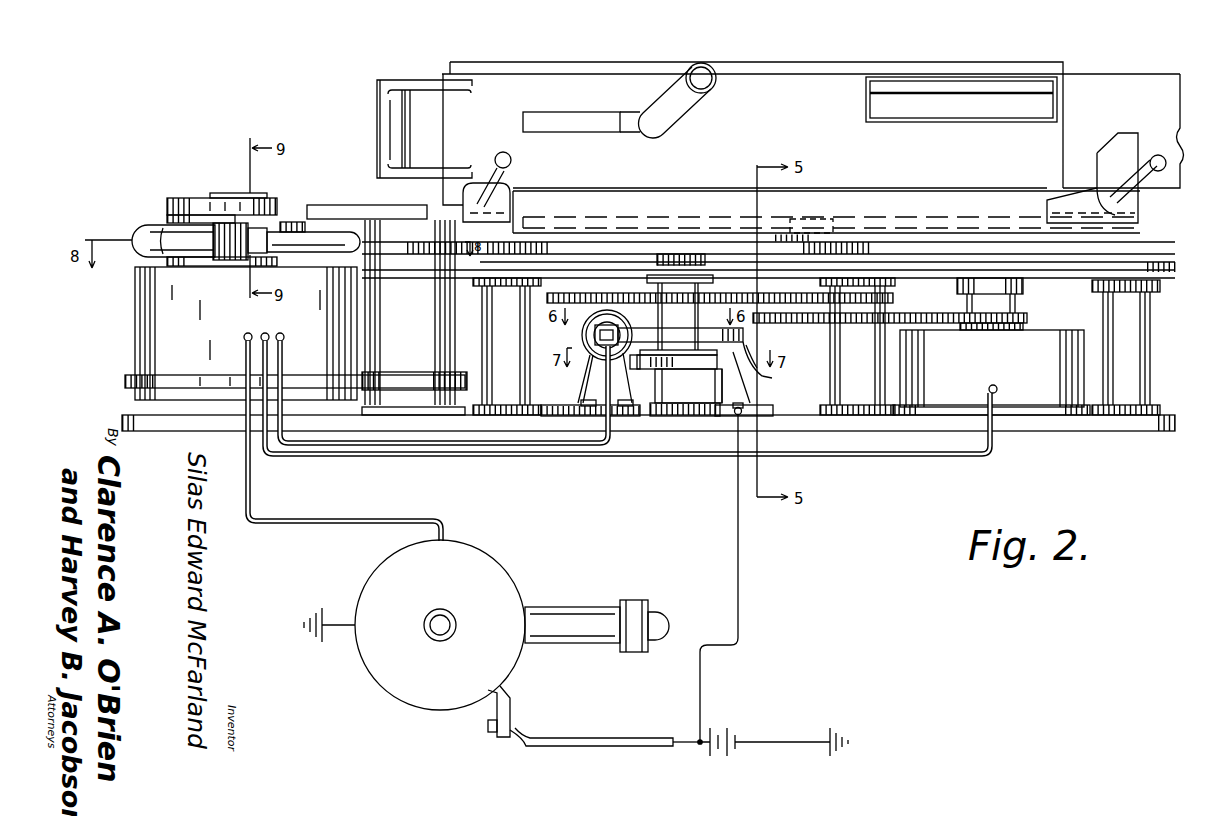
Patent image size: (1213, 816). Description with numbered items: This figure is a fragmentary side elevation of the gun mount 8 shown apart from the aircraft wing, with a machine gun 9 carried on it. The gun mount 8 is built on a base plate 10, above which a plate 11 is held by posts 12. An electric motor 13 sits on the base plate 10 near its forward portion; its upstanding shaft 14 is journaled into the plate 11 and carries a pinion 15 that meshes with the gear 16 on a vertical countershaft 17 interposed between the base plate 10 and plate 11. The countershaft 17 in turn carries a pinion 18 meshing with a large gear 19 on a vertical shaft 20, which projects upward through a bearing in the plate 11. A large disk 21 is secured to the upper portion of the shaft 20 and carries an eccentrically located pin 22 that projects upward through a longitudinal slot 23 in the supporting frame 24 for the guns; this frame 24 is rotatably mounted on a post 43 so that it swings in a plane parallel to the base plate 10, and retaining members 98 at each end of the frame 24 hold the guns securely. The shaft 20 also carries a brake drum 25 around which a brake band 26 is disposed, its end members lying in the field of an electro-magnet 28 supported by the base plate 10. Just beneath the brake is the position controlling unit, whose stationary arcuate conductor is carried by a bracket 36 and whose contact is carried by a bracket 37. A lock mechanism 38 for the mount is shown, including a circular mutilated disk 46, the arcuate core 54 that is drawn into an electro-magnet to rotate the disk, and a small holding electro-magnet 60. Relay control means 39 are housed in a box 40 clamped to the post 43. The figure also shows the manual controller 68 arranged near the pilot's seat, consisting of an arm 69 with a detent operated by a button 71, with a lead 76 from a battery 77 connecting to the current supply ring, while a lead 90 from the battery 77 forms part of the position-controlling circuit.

The gun mount 8 is at (1081, 437).
The machine gun 9 is at (783, 85).
The base plate 10 is at (927, 422).
The plate 11 is at (935, 272).
The post 12 is at (1140, 320).
The electric motor 13 is at (1032, 400).
The upstanding shaft 14 is at (988, 296).
The pinion 15 is at (1022, 317).
The gear 16 is at (810, 326).
The vertical countershaft 17 is at (848, 360).
The pinion 18 is at (895, 298).
The large gear 19 is at (550, 297).
The vertical shaft 20 is at (692, 254).
The large disk 21 is at (606, 247).
The eccentrically located pin 22 is at (795, 222).
The longitudinal slot 23 is at (682, 225).
The supporting frame 24 is at (898, 226).
The brake drum 25 is at (750, 354).
The brake band 26 is at (745, 331).
The electro-magnet 28 is at (595, 358).
The bracket 36 is at (745, 395).
The bracket 37 is at (634, 368).
The lock mechanism 38 is at (226, 186).
The relay control means 39 is at (128, 350).
The box 40 is at (145, 312).
The post 43 is at (440, 352).
The mutilated disk 46 is at (182, 200).
The arcuate core 54 is at (317, 238).
The holding electro-magnet 60 is at (226, 225).
The manual controller 68 is at (508, 549).
The arm 69 is at (570, 620).
The button 71 is at (666, 626).
The lead 76 is at (678, 738).
The battery 77 is at (728, 737).
The lead 90 is at (745, 566).
The retaining member 98 is at (500, 178).